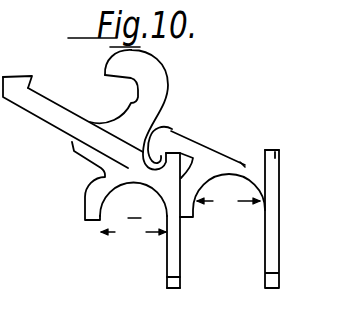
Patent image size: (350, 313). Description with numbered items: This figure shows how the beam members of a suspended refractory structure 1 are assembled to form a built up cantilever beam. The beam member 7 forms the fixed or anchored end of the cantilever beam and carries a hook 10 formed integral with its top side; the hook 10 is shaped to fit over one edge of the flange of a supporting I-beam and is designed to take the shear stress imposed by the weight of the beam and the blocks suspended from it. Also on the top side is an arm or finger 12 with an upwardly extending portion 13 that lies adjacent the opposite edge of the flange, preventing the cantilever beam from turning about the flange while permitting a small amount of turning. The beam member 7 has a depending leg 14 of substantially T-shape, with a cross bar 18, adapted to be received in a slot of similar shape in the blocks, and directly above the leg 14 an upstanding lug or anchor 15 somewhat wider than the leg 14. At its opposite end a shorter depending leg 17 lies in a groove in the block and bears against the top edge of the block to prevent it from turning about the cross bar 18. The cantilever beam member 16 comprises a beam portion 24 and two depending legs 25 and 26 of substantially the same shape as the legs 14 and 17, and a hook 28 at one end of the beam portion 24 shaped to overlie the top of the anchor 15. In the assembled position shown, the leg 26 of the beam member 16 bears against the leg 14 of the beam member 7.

The suspended refractory structure 1 is at (276, 155).
The beam member 7 is at (133, 212).
The hook 10 is at (138, 98).
The arm or finger 12 is at (42, 119).
The upwardly extending portion 13 is at (32, 77).
The depending leg 14 is at (167, 240).
The upstanding lug or anchor 15 is at (187, 151).
The cantilever beam member 16 is at (255, 128).
The depending leg 17 is at (84, 212).
The cross bar 18 is at (181, 288).
The beam portion 24 is at (249, 158).
The depending leg 25 is at (279, 241).
The depending leg 26 is at (193, 214).
The hook 28 is at (172, 131).